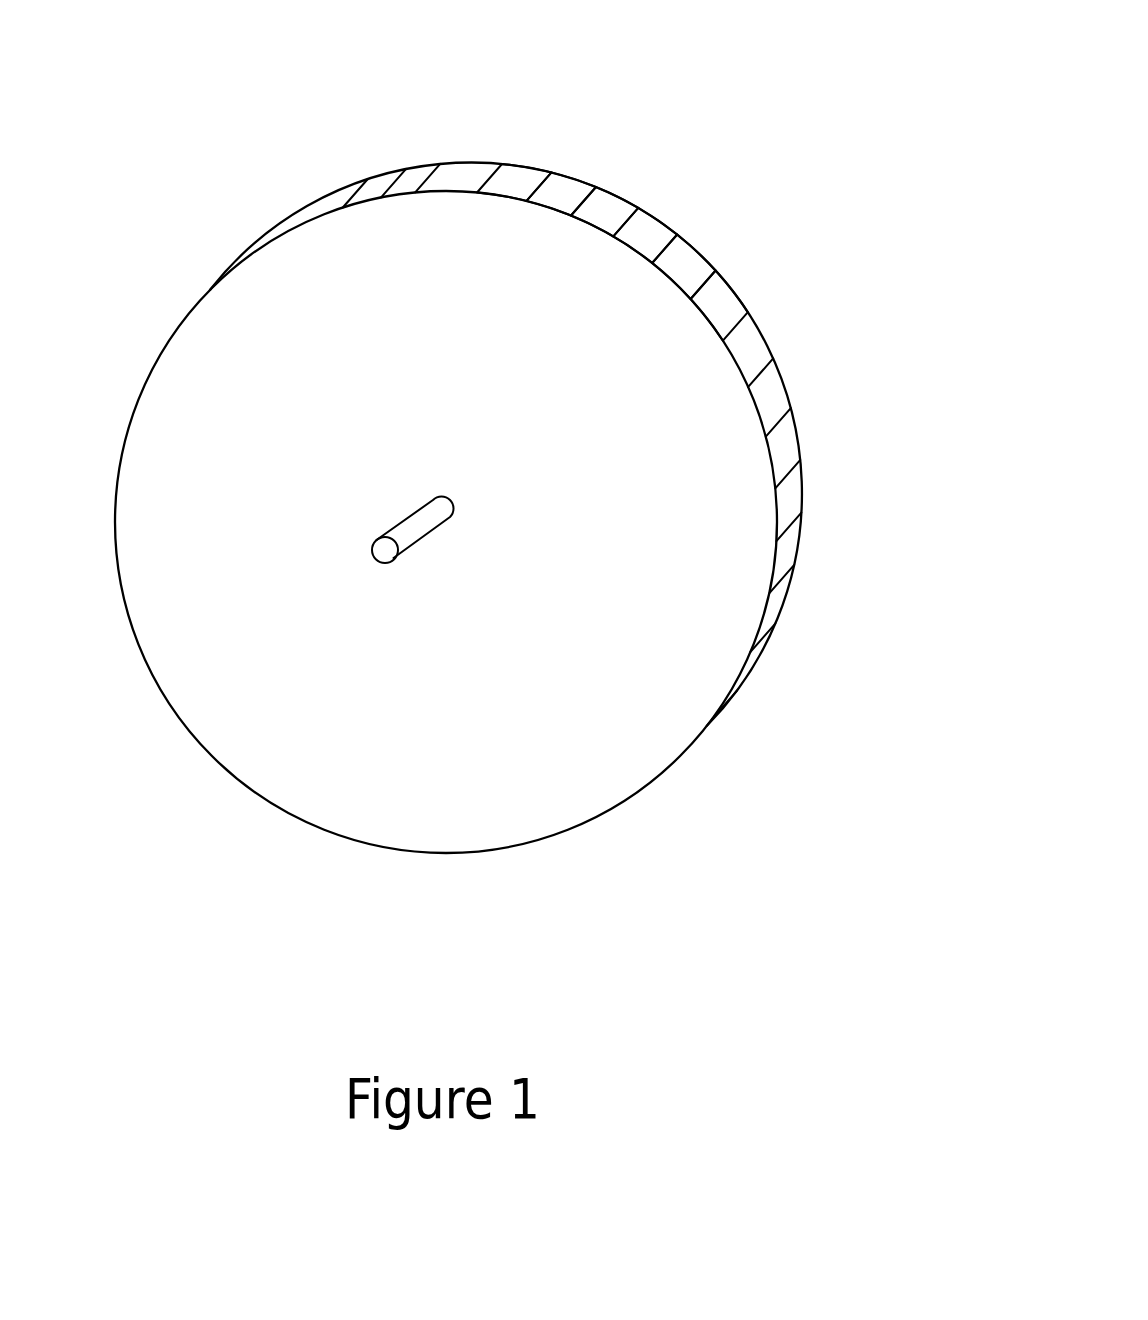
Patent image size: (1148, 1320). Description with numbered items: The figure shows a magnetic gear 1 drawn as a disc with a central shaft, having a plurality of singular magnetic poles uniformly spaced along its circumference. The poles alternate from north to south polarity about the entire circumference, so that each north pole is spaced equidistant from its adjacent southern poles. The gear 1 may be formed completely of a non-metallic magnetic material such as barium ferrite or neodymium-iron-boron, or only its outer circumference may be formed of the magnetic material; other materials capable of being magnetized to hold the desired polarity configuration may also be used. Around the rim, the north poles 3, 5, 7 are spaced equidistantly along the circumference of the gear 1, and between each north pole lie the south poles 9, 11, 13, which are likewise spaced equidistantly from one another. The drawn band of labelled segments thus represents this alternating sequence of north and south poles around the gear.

The magnetic gear 1 is at (662, 753).
The north pole 3 is at (527, 163).
The south pole 9 is at (562, 173).
The north pole 5 is at (617, 195).
The south pole 11 is at (663, 220).
The north pole 13 is at (690, 240).
The north pole 7 is at (732, 290).